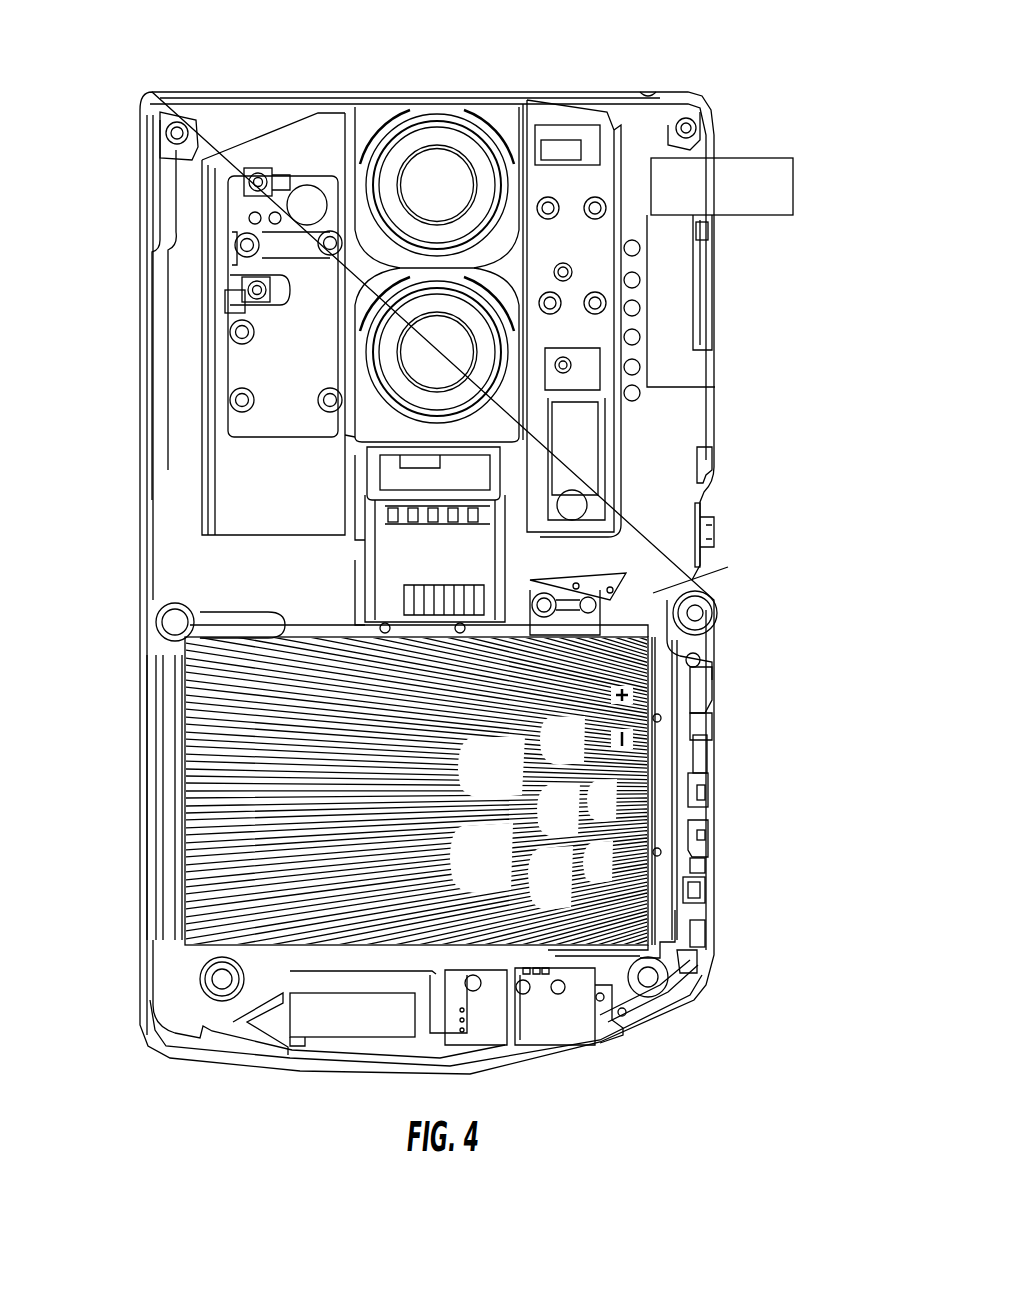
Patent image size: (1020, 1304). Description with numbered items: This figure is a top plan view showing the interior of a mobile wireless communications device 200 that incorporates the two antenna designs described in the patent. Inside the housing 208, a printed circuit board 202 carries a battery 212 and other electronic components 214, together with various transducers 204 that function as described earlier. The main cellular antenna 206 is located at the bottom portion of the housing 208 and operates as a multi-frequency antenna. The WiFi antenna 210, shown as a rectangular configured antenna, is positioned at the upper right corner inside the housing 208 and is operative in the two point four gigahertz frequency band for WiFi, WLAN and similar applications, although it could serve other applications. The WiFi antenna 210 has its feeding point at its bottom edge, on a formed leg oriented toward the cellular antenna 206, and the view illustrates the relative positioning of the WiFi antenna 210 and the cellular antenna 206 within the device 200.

The mobile wireless communications device 200 is at (646, 47).
The printed circuit board 202 is at (322, 146).
The transducers 204 is at (455, 325).
The main cellular antenna 206 is at (565, 1035).
The housing 208 is at (698, 825).
The WiFi antenna 210 is at (585, 247).
The battery 212 is at (205, 796).
The electronic components 214 is at (420, 553).